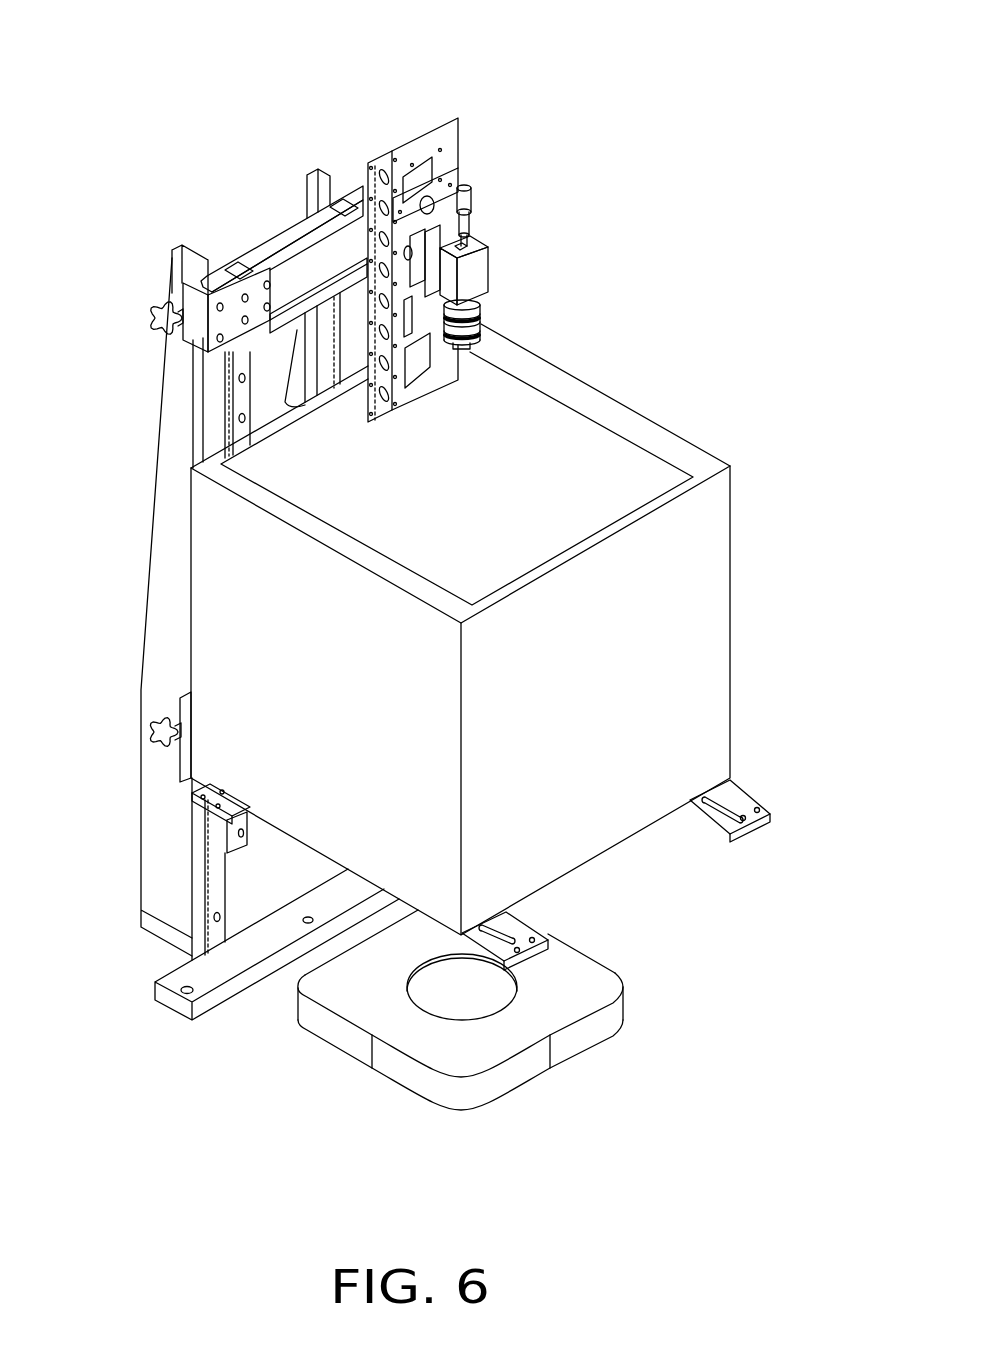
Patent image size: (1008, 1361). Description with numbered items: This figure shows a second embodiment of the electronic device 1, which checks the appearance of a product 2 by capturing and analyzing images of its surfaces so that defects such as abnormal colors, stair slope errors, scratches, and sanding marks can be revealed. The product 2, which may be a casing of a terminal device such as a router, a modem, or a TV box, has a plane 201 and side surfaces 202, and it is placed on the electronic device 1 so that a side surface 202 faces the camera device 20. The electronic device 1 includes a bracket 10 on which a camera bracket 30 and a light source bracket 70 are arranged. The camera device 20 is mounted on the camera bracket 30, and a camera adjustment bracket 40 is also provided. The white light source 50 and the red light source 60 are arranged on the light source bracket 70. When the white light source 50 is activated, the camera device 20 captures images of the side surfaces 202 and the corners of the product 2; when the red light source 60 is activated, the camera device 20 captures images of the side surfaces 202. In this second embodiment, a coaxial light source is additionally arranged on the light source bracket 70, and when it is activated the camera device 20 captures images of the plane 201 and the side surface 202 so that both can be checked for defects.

The electronic device 1 is at (290, 60).
The product 2 is at (628, 1046).
The bracket 10 is at (180, 273).
The camera device 20 is at (477, 270).
The camera bracket 30 is at (472, 188).
The camera adjustment bracket 40 is at (318, 258).
The white light source 50 is at (707, 612).
The red light source 60 is at (740, 810).
The light source bracket 70 is at (183, 710).
The plane 201 is at (582, 968).
The side surface 202 is at (506, 1083).